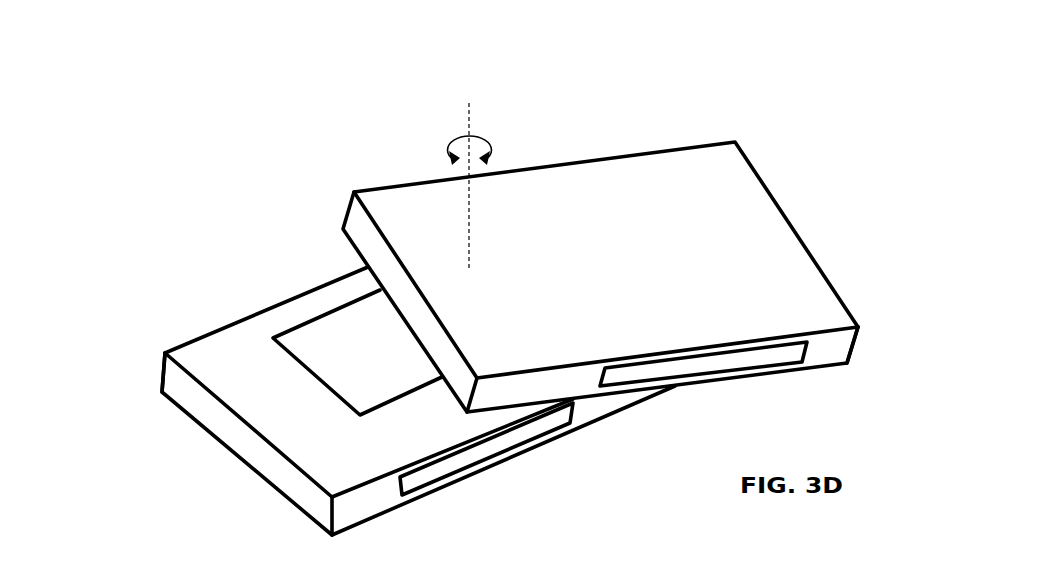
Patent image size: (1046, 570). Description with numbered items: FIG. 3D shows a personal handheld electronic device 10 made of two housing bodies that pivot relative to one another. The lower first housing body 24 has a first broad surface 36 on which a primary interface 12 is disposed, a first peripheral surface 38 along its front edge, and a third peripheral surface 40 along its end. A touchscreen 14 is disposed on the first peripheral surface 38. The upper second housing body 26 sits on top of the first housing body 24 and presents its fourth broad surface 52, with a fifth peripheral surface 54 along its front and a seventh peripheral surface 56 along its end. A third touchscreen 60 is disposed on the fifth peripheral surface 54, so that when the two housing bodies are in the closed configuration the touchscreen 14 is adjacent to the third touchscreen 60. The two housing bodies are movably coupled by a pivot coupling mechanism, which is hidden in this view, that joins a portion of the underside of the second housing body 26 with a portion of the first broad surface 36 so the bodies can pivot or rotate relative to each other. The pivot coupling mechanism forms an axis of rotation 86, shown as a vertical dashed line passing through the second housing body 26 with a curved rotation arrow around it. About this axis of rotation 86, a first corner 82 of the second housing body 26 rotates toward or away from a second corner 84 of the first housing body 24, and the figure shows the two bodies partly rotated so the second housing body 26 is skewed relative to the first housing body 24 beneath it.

The electronic device 10 is at (733, 88).
The primary interface 12 is at (376, 369).
The touchscreen 14 is at (482, 450).
The first housing body 24 is at (243, 317).
The second housing body 26 is at (807, 243).
The first broad surface 36 is at (252, 374).
The first peripheral surface 38 is at (380, 513).
The third peripheral surface 40 is at (319, 504).
The fourth broad surface 52 is at (619, 261).
The fifth peripheral surface 54 is at (527, 401).
The seventh peripheral surface 56 is at (452, 359).
The third touchscreen 60 is at (693, 360).
The first corner 82 is at (849, 362).
The second corner 84 is at (165, 353).
The axis of rotation 86 is at (470, 123).